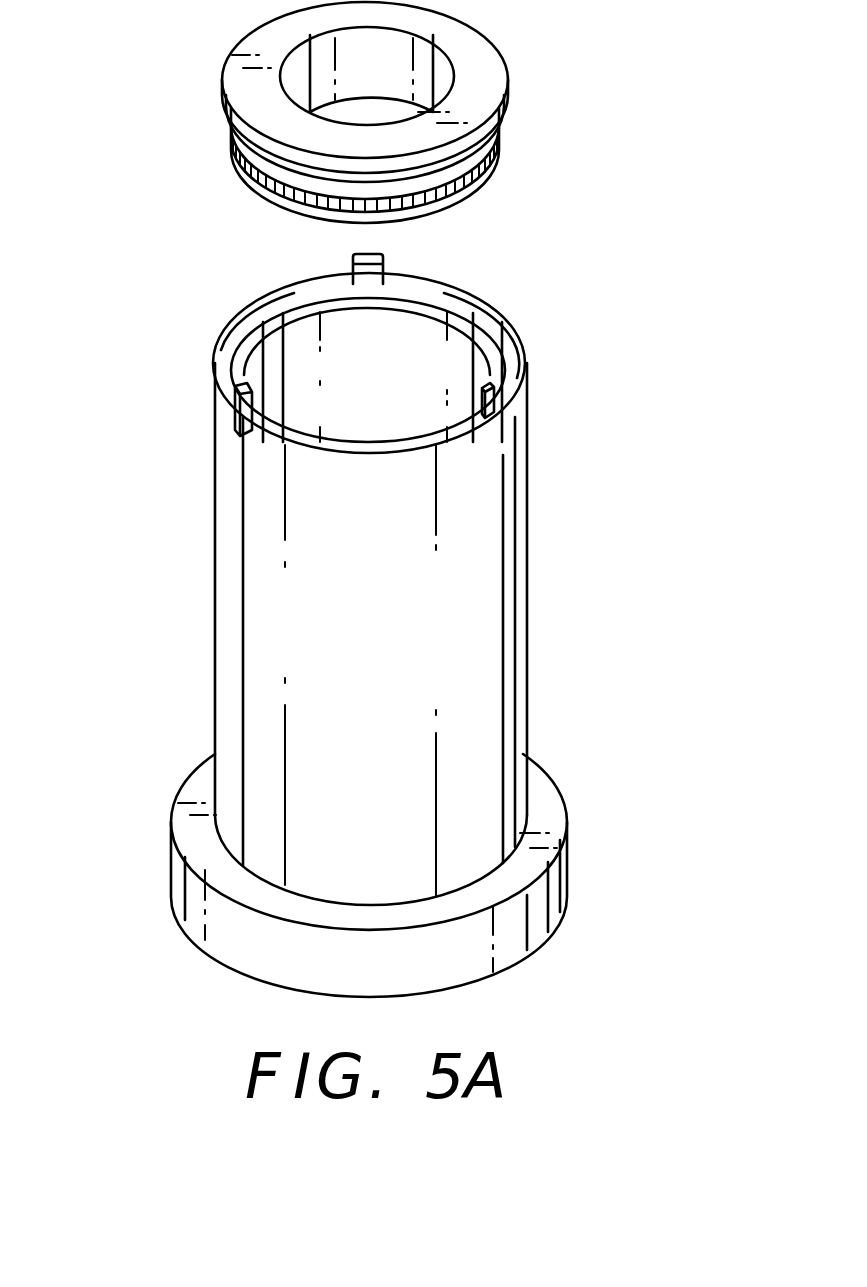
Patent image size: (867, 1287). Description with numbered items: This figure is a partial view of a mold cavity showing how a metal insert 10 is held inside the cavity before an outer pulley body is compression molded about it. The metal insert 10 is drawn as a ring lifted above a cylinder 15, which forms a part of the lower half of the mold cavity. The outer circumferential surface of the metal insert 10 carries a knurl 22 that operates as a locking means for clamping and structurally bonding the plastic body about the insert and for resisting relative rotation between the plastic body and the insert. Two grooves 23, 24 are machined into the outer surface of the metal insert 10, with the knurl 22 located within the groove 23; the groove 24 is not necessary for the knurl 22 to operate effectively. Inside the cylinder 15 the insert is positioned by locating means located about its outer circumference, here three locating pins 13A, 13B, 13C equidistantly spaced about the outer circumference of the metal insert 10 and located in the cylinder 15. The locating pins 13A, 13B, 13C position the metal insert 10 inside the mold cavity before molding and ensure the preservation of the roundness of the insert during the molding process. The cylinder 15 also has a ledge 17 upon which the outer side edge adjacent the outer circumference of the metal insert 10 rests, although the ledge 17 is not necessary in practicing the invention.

The metal insert 10 is at (527, 82).
The groove 24 is at (220, 132).
The groove 23 is at (244, 195).
The knurl 22 is at (448, 212).
The cylinder 15 is at (188, 698).
The ledge 17 is at (438, 289).
The locating pin 13A is at (526, 381).
The locating pin 13B is at (330, 252).
The locating pin 13C is at (208, 414).